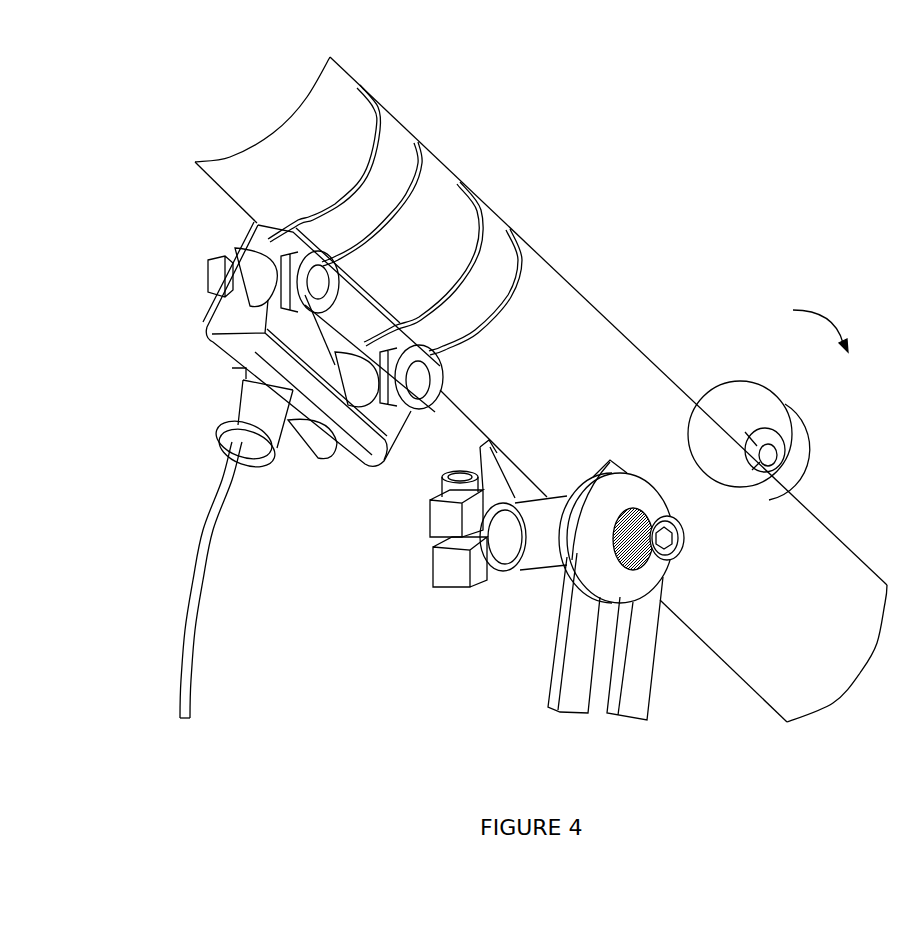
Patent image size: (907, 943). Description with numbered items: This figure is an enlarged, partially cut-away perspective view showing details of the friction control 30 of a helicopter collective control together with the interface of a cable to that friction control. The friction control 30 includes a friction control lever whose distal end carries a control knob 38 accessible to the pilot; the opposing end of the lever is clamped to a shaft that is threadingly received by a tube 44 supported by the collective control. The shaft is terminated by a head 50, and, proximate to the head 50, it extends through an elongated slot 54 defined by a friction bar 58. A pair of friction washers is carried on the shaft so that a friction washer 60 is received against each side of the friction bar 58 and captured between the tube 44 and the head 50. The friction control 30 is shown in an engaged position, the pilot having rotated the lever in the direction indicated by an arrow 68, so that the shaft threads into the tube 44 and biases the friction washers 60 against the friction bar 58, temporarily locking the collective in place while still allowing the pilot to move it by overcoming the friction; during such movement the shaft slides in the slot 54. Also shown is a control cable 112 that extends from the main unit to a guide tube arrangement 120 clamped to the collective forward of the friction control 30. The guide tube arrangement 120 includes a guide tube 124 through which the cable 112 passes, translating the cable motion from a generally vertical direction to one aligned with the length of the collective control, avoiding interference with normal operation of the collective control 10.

The rail tube 10 is at (843, 543).
The friction control 30 is at (748, 343).
The control knob 38 is at (782, 400).
The tube 44 is at (545, 567).
The head 50 is at (684, 542).
The elongated slot 54 is at (600, 673).
The friction bar 58 is at (650, 705).
The friction washer 60 is at (577, 487).
The arrow 68 is at (830, 318).
The control cable 112 is at (197, 547).
The guide tube arrangement 120 is at (192, 329).
The guide tube 124 is at (236, 405).